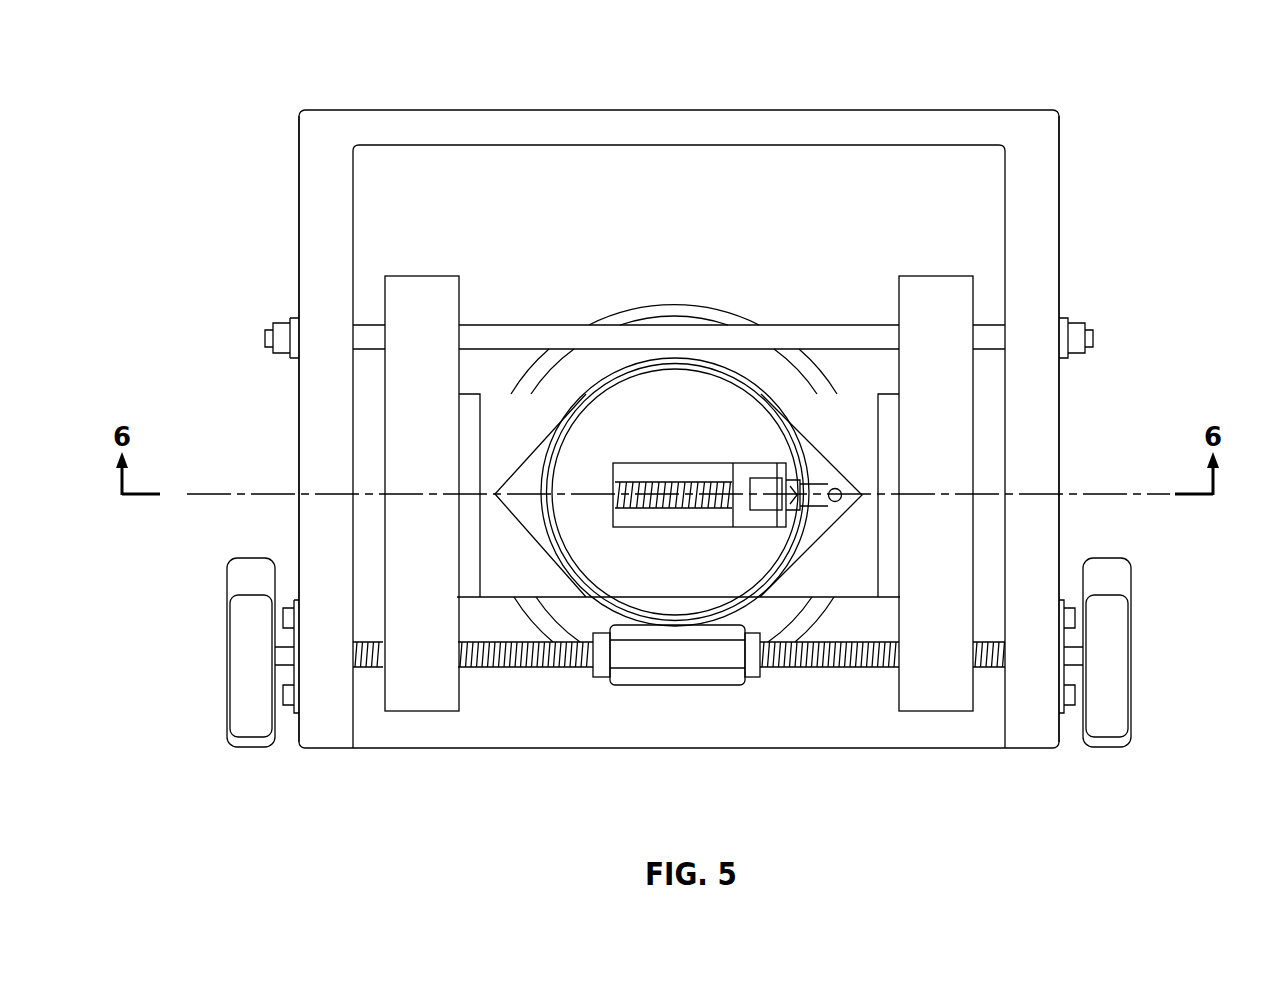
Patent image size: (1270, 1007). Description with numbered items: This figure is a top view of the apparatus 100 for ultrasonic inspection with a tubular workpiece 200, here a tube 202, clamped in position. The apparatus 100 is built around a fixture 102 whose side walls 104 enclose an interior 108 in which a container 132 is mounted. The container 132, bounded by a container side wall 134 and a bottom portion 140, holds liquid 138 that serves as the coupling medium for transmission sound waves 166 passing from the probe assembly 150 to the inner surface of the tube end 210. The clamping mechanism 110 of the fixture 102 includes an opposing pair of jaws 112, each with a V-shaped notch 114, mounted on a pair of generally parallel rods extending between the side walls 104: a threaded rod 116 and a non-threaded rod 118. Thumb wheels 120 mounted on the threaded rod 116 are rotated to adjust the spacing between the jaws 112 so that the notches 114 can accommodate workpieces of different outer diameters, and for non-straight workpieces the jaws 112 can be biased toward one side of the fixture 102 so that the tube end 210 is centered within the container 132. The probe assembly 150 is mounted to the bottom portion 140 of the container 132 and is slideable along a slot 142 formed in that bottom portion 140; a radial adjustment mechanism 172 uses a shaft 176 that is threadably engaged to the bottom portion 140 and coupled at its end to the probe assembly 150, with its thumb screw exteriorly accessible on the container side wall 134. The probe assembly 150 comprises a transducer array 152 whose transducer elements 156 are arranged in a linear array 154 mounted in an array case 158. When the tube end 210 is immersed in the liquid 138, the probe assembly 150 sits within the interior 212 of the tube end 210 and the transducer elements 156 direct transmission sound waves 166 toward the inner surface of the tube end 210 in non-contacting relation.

The apparatus 100 is at (347, 108).
The fixture 102 is at (298, 128).
The side walls 104 is at (1060, 226).
The interior 108 is at (952, 200).
The clamping mechanism 110 is at (948, 377).
The jaws 112 is at (510, 463).
The V-shaped notch 114 is at (553, 440).
The threaded rod 116 is at (373, 667).
The non-threaded rod 118 is at (828, 325).
The thumb wheels 120 is at (226, 636).
The container 132 is at (683, 302).
The container side wall 134 is at (525, 377).
The liquid 138 is at (634, 396).
The bottom portion 140 is at (568, 667).
The slot 142 is at (687, 520).
The probe assembly 150 is at (762, 527).
The transducer array 152 is at (785, 525).
The linear array 154 is at (745, 512).
The transducer elements 156 is at (810, 535).
The array case 158 is at (807, 443).
The transmission sound waves 166 is at (840, 478).
The radial adjustment mechanism 172 is at (510, 665).
The shaft 176 is at (710, 480).
The tubular workpiece 200 is at (553, 493).
The tube 202 is at (763, 465).
The tube end 210 is at (567, 537).
The interior 212 is at (680, 390).